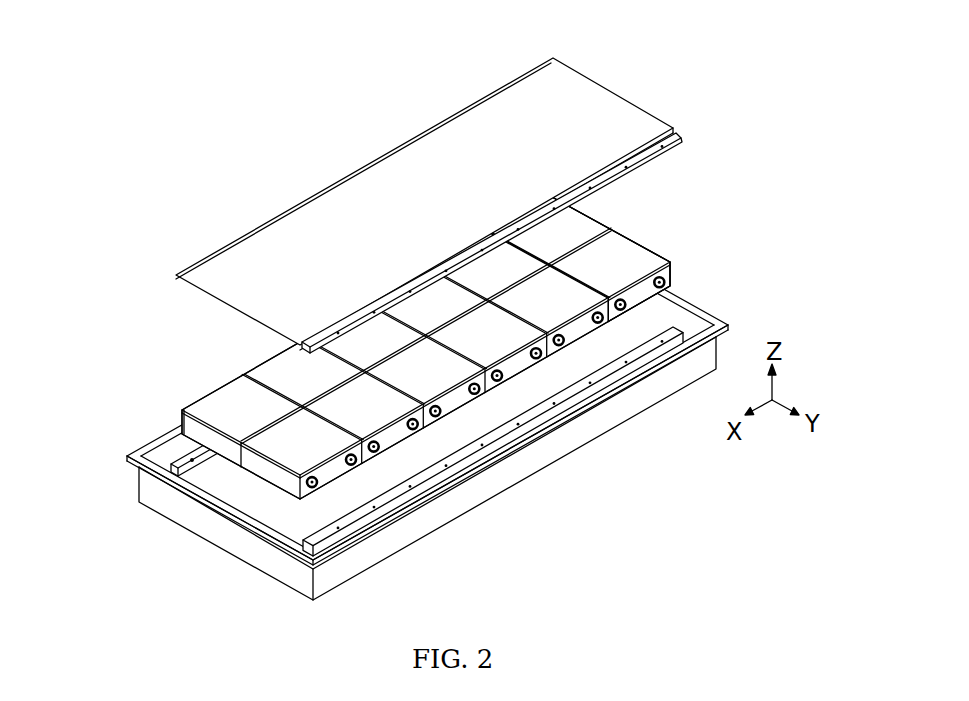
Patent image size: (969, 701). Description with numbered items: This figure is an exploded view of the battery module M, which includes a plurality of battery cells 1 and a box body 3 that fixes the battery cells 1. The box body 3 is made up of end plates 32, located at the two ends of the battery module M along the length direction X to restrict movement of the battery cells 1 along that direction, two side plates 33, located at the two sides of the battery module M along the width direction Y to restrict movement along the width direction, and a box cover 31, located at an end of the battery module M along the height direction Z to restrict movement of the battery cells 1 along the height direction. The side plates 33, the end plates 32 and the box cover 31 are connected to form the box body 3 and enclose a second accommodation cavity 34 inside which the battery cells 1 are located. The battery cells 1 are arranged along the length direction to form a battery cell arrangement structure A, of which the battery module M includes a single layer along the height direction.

The battery module M is at (401, 309).
The box body 3 is at (401, 329).
The box cover 31 is at (283, 231).
The end plates 32 is at (424, 410).
The side plates 33 is at (488, 498).
The second accommodation cavity 34 is at (172, 446).
The battery cell arrangement structure A is at (451, 348).
The battery cell 1 is at (674, 285).